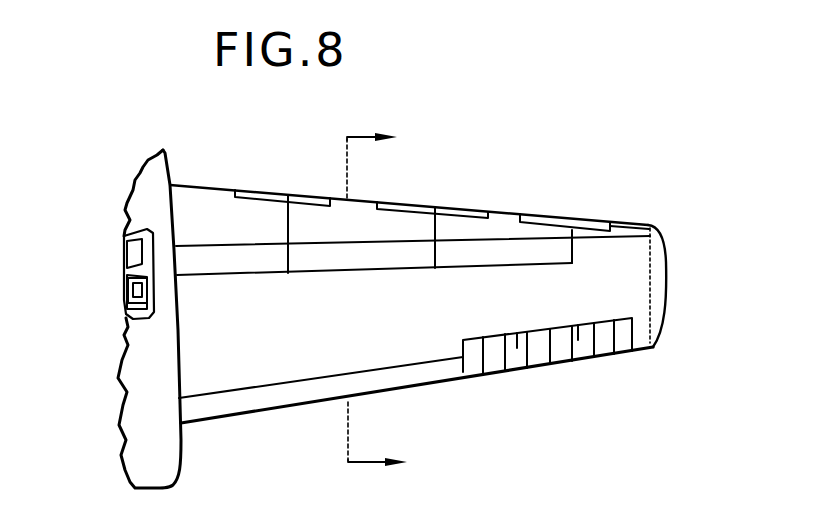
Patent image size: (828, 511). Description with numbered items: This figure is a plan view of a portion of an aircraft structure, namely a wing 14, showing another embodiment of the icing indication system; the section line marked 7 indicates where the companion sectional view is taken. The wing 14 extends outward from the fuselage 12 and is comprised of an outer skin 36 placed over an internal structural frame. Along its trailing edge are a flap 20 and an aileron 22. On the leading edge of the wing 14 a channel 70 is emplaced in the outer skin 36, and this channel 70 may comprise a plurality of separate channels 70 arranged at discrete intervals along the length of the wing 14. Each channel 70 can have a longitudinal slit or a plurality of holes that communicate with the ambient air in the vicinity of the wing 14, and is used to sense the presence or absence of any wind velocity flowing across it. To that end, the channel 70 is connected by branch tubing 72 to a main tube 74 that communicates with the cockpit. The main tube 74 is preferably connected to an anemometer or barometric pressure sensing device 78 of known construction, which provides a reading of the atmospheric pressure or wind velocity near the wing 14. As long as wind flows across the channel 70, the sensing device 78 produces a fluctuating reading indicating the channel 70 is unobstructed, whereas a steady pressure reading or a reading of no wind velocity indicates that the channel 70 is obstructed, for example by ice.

The section line 7- 7 is at (388, 299).
The fuselage 12 is at (143, 336).
The wing 14 is at (366, 333).
The flap 20 is at (426, 373).
The aileron 22 is at (572, 348).
The outer skin 36 is at (354, 198).
The channel 70 is at (298, 190).
The branch tubing 72 is at (287, 222).
The main tube 74 is at (497, 264).
The anemometer or barometric pressure sensing device 78 is at (128, 292).